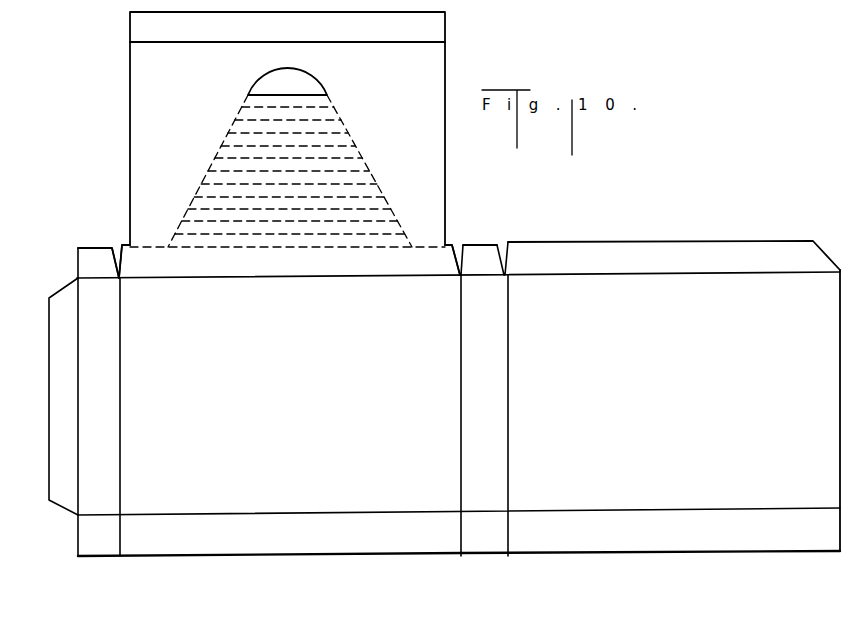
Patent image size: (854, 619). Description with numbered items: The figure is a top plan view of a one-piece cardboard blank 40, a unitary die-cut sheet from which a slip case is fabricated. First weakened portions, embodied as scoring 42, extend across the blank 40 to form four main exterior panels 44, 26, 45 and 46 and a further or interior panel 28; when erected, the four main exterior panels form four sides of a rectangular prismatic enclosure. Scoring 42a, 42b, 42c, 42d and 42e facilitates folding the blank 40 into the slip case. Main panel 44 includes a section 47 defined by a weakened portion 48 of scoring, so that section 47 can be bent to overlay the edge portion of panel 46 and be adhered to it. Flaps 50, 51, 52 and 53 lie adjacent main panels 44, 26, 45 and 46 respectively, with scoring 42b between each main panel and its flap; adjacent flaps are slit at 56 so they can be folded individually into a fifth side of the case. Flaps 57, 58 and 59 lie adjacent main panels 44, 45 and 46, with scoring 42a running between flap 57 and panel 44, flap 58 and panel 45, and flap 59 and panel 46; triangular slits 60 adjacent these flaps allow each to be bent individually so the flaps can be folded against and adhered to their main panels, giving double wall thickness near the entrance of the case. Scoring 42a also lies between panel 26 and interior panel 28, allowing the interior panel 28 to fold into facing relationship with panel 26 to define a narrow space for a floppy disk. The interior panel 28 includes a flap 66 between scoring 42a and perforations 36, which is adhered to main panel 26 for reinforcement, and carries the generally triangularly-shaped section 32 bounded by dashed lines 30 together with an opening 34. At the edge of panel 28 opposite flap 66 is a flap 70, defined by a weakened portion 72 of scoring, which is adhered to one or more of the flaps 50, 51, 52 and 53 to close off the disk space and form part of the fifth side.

The first main exterior panel 26 is at (281, 423).
The interior panel 28 is at (451, 79).
The tapered region outline 30 is at (212, 170).
The triangularly-shaped section 32 is at (364, 164).
The opening 34 is at (307, 80).
The perforations 36 is at (422, 243).
The one-piece cardboard blank 40 is at (615, 229).
The first weakened portions 42 is at (129, 458).
The scoring 42a is at (100, 280).
The scoring 42b is at (113, 517).
The scoring 42c is at (123, 423).
The scoring 42d is at (460, 405).
The fold line 42e is at (510, 405).
The main panel 44 is at (91, 311).
The main exterior panel 45 is at (476, 392).
The main exterior panel 46 is at (669, 395).
The section 47 is at (58, 413).
The weakened portion 48 is at (80, 377).
The flap 50 is at (103, 540).
The flap 51 is at (278, 545).
The flap 52 is at (483, 539).
The flap 53 is at (669, 542).
The slit 56 is at (124, 547).
The flap 57 is at (90, 258).
The flap 58 is at (480, 253).
The flap 59 is at (631, 265).
The triangular slits 60 is at (118, 243).
The flap 66 is at (278, 273).
The flap 70 is at (281, 33).
The weakened portion 72 is at (187, 47).